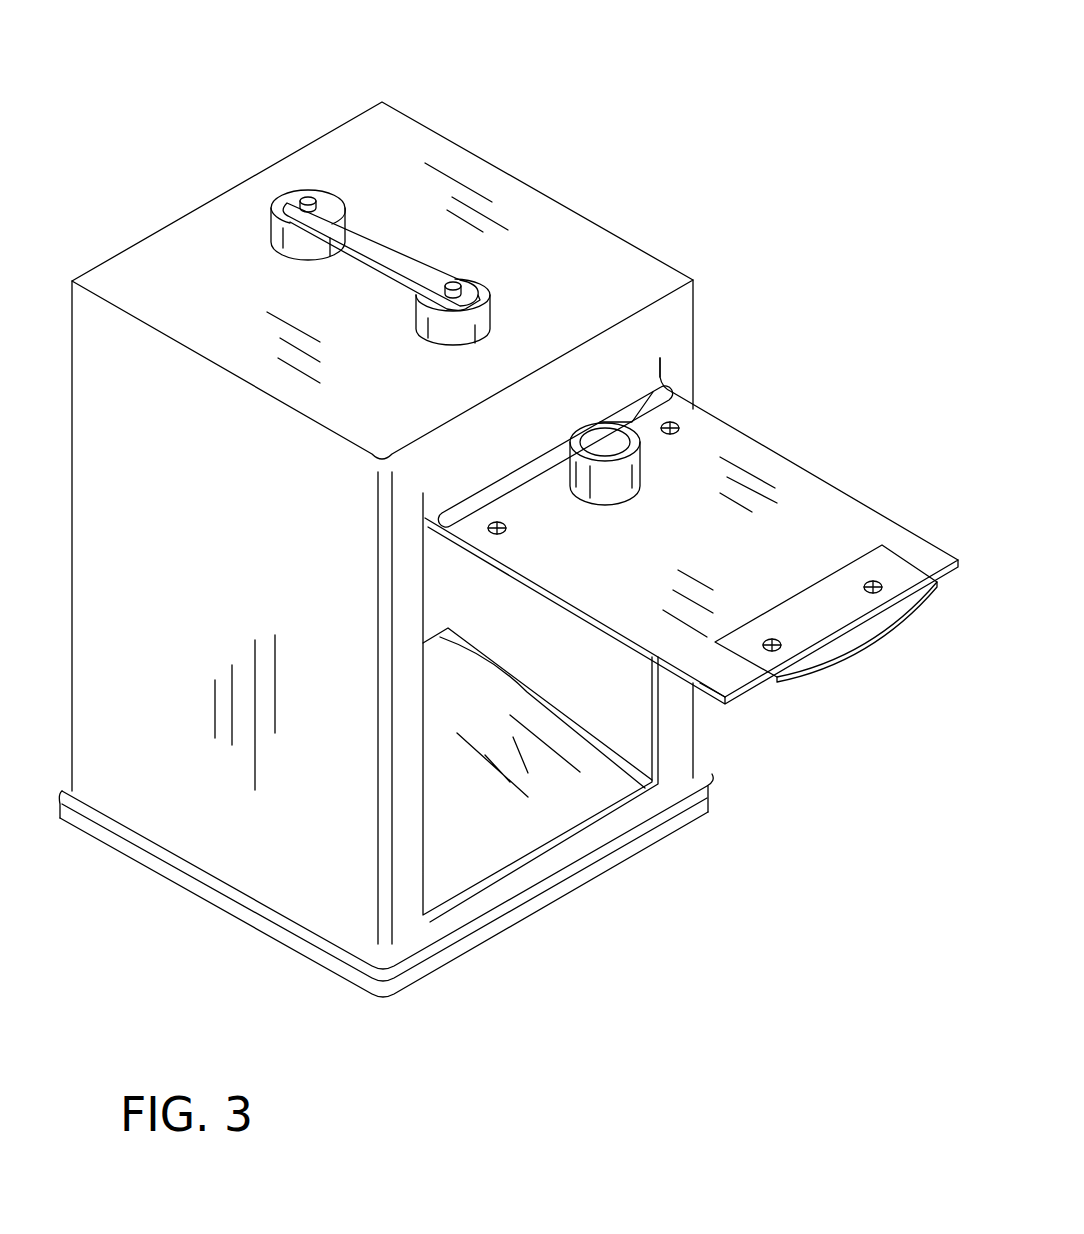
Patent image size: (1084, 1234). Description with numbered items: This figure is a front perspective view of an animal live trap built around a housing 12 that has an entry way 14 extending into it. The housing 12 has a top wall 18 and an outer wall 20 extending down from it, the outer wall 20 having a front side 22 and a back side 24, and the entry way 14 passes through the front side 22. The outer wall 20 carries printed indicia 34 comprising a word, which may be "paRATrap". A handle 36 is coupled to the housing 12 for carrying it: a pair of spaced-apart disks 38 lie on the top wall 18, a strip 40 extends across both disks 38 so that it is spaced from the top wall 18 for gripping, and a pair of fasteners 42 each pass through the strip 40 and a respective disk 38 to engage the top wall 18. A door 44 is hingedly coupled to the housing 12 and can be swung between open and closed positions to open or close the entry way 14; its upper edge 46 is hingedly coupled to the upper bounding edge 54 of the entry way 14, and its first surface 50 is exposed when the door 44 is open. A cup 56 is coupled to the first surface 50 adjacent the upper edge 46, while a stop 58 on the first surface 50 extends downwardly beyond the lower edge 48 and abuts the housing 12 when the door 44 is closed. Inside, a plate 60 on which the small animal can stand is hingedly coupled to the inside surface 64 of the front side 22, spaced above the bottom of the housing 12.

The housing 12 is at (415, 498).
The entry way 14 is at (560, 771).
The top wall 18 is at (220, 268).
The outer wall 20 is at (132, 730).
The front side 22 is at (682, 318).
The back side 24 is at (73, 333).
The indicia 34 is at (147, 457).
The handle 36 is at (421, 192).
The disks 38 is at (276, 200).
The strip 40 is at (360, 233).
The fasteners 42 is at (306, 196).
The door 44 is at (690, 604).
The upper edge 46 is at (533, 452).
The lower edge 48 is at (746, 686).
The first surface 50 is at (852, 525).
The upper bounding edge 54 is at (422, 493).
The cup 56 is at (643, 465).
The stop 58 is at (858, 623).
The plate 60 is at (510, 822).
The inside surface 64 is at (615, 667).